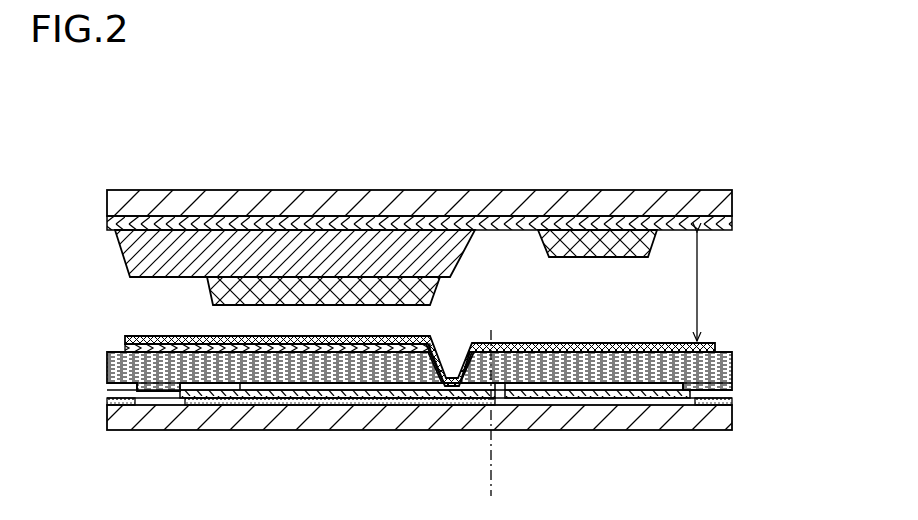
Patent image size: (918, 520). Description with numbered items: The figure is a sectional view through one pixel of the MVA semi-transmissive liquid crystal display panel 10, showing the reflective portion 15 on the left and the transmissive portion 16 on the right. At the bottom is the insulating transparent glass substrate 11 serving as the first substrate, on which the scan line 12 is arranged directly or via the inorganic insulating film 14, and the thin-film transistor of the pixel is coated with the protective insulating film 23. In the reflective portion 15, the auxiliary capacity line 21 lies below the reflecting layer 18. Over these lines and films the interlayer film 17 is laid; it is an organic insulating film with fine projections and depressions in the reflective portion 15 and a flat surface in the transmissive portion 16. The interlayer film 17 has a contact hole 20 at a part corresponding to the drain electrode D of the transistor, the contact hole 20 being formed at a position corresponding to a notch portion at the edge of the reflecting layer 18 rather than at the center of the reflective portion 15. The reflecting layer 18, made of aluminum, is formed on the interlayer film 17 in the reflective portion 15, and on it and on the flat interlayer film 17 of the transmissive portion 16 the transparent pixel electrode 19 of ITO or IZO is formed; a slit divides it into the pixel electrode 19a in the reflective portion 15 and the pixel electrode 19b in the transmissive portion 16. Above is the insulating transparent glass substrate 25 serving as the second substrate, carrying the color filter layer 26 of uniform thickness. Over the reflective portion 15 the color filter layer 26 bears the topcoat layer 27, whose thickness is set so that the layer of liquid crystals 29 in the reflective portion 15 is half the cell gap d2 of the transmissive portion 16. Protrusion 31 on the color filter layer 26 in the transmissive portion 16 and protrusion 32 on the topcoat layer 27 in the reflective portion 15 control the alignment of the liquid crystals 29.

The MVA semi-transmissive liquid crystal display panel 10 is at (131, 110).
The transparent glass substrate 11 is at (223, 416).
The scan line 12 is at (112, 402).
The inorganic insulating film 14 is at (600, 400).
The reflective portion 15 is at (488, 485).
The transmissive portion 16 is at (494, 485).
The interlayer film 17 is at (107, 366).
The reflecting layer 18 is at (383, 336).
The pixel electrode 19 is at (563, 300).
The pixel electrode 19a is at (440, 340).
The pixel electrode 19b is at (518, 342).
The contact hole 20 is at (455, 392).
The auxiliary capacity line 21 is at (333, 400).
The protective insulating film 23 is at (560, 398).
The transparent glass substrate 25 is at (246, 205).
The color filter layer 26 is at (622, 226).
The topcoat layer 27 is at (418, 246).
The liquid crystals 29 is at (673, 296).
The protrusion 31 is at (590, 246).
The protrusion 32 is at (228, 303).
The drain electrode D is at (268, 386).
The cell gap d2 is at (712, 286).